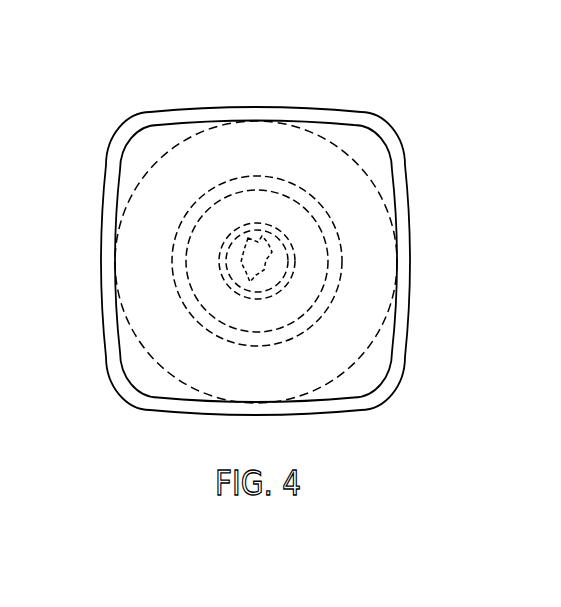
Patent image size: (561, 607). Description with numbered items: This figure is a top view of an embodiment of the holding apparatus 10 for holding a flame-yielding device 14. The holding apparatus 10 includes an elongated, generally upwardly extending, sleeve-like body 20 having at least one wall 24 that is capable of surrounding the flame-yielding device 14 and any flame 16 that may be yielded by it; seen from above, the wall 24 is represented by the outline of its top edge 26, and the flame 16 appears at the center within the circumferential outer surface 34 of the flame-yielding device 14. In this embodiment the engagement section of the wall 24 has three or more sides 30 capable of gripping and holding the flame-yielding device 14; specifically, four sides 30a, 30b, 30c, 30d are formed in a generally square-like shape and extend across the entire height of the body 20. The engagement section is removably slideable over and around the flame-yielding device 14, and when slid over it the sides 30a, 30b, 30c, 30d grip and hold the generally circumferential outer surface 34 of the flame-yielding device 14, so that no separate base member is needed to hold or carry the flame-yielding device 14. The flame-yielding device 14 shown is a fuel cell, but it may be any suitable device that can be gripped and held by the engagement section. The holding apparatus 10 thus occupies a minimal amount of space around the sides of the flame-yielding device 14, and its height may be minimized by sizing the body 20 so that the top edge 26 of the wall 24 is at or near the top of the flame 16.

The holding apparatus 10 is at (242, 261).
The flame-yielding device 14 is at (178, 143).
The flame 16 is at (270, 243).
The body 20 is at (212, 272).
The wall 24 is at (105, 340).
The top edge 26 is at (120, 378).
The sides 30 is at (242, 261).
The side 30a is at (255, 105).
The side 30b is at (412, 223).
The side 30c is at (318, 413).
The side 30d is at (102, 213).
The outer surface 34 is at (313, 132).